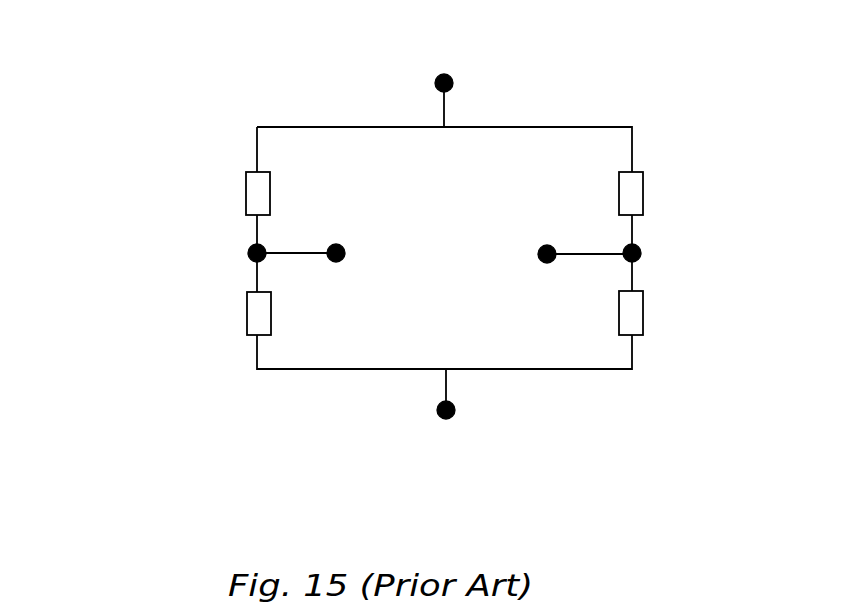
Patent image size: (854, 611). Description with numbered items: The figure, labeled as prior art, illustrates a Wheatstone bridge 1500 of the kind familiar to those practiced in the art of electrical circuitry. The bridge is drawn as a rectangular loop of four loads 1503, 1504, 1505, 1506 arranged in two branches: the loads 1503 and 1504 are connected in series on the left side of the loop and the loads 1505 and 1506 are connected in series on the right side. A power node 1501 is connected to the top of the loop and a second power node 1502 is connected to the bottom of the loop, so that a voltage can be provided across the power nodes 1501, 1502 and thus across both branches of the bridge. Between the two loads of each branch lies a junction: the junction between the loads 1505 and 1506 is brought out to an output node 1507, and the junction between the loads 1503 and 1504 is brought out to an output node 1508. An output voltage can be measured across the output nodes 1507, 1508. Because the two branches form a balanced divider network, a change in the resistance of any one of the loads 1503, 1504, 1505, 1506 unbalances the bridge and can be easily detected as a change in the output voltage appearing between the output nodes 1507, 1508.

The Wheatstone bridge 1500 is at (233, 131).
The power node 1501 is at (453, 83).
The power node 1502 is at (455, 411).
The load 1503 is at (251, 195).
The load 1504 is at (253, 319).
The load 1505 is at (637, 186).
The load 1506 is at (635, 313).
The output node 1507 is at (539, 252).
The output node 1508 is at (344, 258).